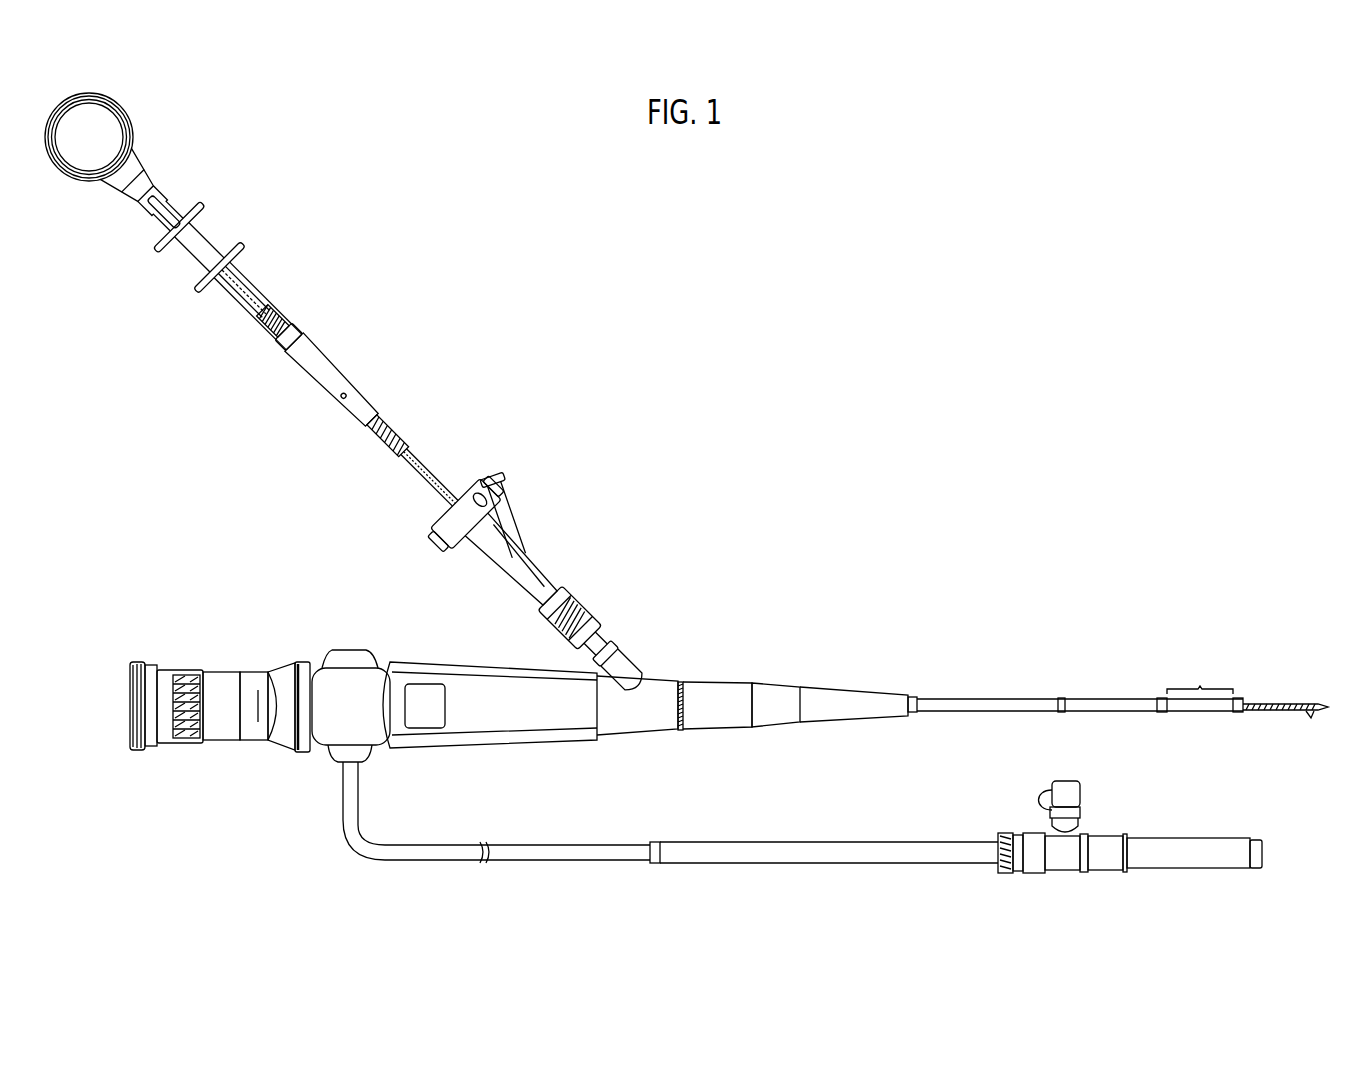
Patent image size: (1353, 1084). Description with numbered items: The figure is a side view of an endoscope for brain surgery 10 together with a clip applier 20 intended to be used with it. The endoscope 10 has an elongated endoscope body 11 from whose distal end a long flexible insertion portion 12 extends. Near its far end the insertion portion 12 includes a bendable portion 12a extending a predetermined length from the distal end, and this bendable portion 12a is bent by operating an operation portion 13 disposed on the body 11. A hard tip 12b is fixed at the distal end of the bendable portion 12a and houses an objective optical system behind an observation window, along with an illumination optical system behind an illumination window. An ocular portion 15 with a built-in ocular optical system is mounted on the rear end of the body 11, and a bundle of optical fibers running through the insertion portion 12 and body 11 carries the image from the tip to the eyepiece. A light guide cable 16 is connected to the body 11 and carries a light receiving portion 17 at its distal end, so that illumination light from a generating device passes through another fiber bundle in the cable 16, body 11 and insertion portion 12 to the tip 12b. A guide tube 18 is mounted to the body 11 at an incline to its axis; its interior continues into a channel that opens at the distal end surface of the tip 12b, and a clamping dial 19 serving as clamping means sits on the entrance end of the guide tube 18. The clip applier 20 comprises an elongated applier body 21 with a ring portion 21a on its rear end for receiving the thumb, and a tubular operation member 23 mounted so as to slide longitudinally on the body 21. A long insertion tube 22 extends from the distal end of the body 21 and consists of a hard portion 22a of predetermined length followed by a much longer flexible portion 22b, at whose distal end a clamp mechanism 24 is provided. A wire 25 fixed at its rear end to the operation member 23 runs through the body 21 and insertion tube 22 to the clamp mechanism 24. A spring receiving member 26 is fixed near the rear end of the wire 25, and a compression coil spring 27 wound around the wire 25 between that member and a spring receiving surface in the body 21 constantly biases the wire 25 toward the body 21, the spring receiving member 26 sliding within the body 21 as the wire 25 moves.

The endoscope for brain surgery 10 is at (764, 668).
The endoscope body 11 is at (470, 662).
The insertion portion 12 is at (963, 698).
The bendable portion 12a is at (1200, 675).
The hard tip 12b is at (1246, 697).
The operation portion 13 is at (348, 662).
The ocular portion 15 is at (187, 668).
The light guide cable 16 is at (603, 865).
The light receiving portion 17 is at (1185, 870).
The guide tube 18 is at (556, 587).
The clamping dial 19 is at (487, 517).
The clip applier 20 is at (352, 343).
The applier body 21 is at (318, 338).
The ring portion 21a is at (117, 107).
The insertion tube 22 is at (440, 485).
The hard portion 22a is at (432, 495).
The flexible portion 22b is at (1268, 711).
The operation member 23 is at (210, 236).
The clamp mechanism 24 is at (1311, 720).
The wire 25 is at (252, 283).
The spring receiving member 26 is at (260, 328).
The compression coil spring 27 is at (280, 344).